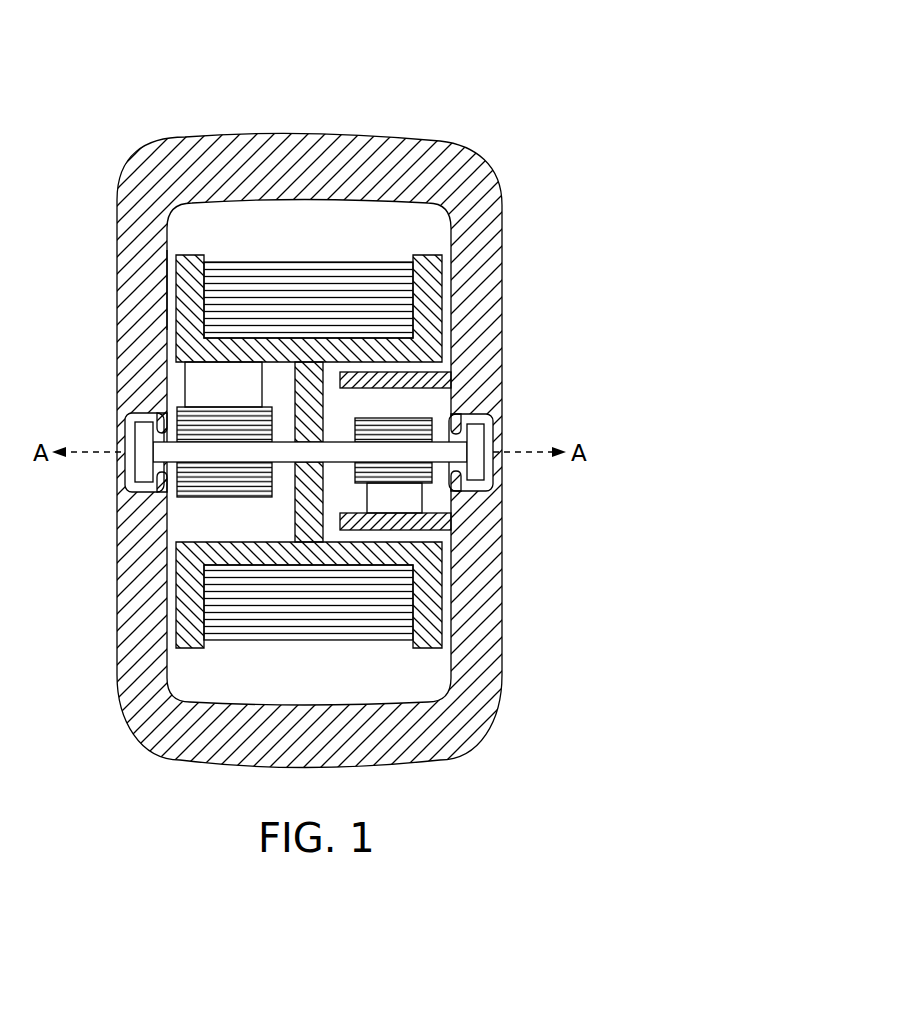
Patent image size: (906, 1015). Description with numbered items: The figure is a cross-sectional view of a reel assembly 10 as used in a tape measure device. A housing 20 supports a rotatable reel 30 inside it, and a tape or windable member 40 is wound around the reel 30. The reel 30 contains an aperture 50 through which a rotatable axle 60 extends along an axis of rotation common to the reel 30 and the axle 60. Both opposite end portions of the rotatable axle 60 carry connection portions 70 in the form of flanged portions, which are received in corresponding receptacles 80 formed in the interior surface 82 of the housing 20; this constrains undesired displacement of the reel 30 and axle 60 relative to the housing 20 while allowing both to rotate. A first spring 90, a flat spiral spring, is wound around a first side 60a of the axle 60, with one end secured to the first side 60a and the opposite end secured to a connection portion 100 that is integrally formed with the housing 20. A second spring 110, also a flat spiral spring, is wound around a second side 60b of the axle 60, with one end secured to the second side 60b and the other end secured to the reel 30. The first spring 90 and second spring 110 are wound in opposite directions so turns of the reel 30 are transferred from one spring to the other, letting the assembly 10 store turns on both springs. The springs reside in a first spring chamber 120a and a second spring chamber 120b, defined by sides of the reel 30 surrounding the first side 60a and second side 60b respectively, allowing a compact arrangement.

The reel assembly 10 is at (523, 69).
The housing 20 is at (404, 148).
The rotatable reel 30 is at (425, 272).
The windable member 40 is at (278, 300).
The aperture 50 is at (330, 429).
The rotatable axle 60 is at (452, 455).
The first side of the rotatable axle 60a is at (405, 460).
The second side of the rotatable axle 60b is at (252, 452).
The connection portion 70 is at (143, 433).
The receptacle 80 is at (485, 486).
The interior surface of the housing 82 is at (164, 287).
The first spring 90 is at (420, 388).
The connection portion 100 is at (428, 522).
The second spring 110 is at (187, 426).
The first spring chamber 120a is at (406, 405).
The second spring chamber 120b is at (184, 524).